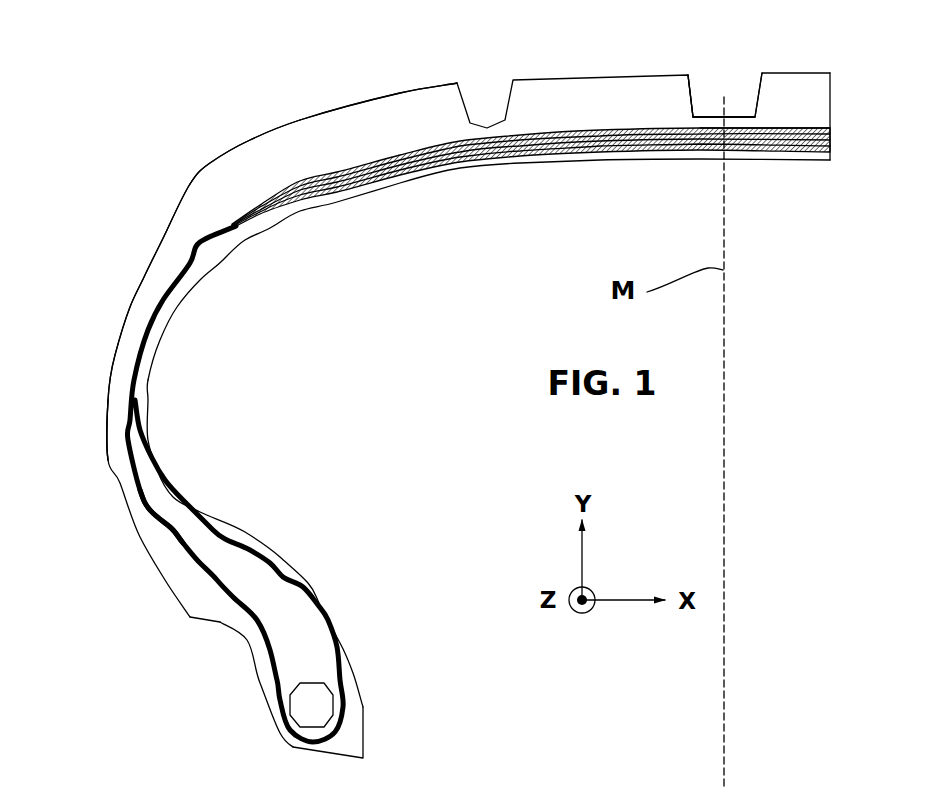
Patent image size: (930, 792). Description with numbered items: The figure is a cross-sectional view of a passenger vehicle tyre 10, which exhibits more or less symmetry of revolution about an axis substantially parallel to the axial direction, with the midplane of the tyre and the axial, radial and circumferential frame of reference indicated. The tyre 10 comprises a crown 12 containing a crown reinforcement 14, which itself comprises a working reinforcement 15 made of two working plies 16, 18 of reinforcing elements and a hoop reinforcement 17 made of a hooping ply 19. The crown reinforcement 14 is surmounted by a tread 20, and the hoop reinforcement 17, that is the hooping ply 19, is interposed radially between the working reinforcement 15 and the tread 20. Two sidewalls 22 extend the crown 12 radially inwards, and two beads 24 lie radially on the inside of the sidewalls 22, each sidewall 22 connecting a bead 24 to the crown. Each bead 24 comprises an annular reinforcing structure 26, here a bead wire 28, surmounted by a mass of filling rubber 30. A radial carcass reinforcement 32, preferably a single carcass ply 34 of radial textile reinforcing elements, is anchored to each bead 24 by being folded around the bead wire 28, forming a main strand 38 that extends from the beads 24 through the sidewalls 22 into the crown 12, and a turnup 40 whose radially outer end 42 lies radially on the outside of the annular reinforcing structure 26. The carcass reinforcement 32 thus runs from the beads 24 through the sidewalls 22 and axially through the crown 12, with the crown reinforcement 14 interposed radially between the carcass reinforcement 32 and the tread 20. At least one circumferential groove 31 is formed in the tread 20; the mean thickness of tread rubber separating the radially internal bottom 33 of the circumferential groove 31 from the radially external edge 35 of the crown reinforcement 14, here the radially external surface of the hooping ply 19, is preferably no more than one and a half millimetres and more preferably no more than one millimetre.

The tyre 10 is at (212, 82).
The crown 12 is at (587, 100).
The crown reinforcement 14 is at (668, 96).
The working reinforcement 15 is at (245, 213).
The working ply 16 is at (257, 192).
The hoop reinforcement 17 is at (388, 138).
The working ply 18 is at (233, 160).
The hooping ply 19 is at (330, 172).
The tread 20 is at (400, 92).
The sidewall 22 is at (134, 305).
The bead 24 is at (357, 713).
The annular reinforcing structure 26 is at (345, 727).
The bead wire 28 is at (303, 710).
The mass of filling rubber 30 is at (282, 643).
The circumferential groove 31 is at (741, 98).
The radial carcass reinforcement 32 is at (166, 259).
The radially internal bottom 33 is at (710, 117).
The carcass ply 34 is at (130, 378).
The radially external edge 35 is at (756, 130).
The main strand 38 is at (343, 640).
The turnup 40 is at (158, 533).
The radially outer end 42 is at (120, 425).